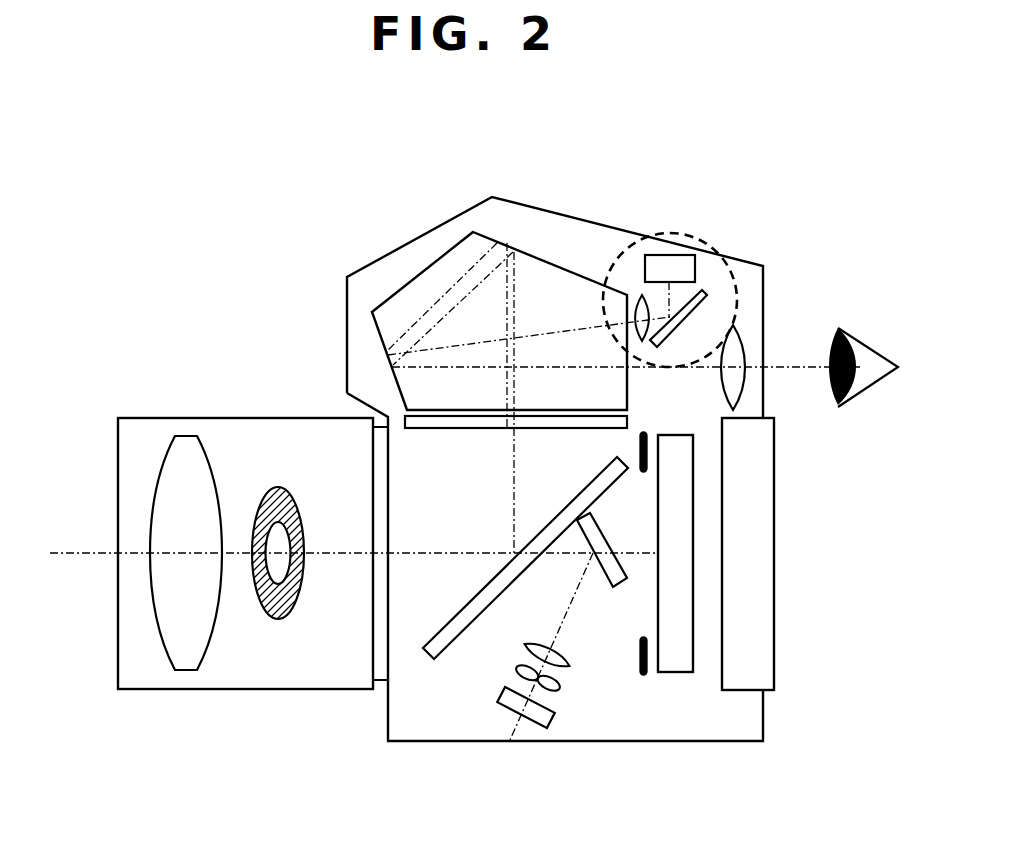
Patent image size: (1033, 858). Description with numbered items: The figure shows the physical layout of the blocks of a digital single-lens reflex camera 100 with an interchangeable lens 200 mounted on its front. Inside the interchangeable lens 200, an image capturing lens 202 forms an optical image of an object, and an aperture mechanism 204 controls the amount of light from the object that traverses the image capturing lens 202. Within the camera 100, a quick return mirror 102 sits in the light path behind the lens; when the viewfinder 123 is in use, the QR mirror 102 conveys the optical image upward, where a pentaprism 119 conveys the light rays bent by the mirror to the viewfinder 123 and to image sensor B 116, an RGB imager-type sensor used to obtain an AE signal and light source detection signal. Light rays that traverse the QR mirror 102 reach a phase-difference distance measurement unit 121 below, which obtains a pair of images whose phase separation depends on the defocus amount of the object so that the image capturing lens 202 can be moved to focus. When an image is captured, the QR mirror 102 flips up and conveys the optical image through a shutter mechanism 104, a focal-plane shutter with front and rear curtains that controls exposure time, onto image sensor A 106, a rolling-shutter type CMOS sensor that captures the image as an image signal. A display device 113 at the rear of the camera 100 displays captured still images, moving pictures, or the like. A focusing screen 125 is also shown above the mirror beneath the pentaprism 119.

The digital single-lens reflex camera 100 is at (763, 715).
The interchangeable lens 200 is at (263, 693).
The image capturing lens 202 is at (185, 435).
The aperture mechanism 204 is at (282, 485).
The pentaprism 119 is at (410, 280).
The focusing screen 125 is at (530, 430).
The quick return (QR) mirror 102 is at (478, 592).
The phase-difference distance measurement unit 121 is at (505, 710).
The shutter mechanism 104 is at (643, 680).
The image sensor A 106 is at (680, 675).
The display device 113 is at (774, 585).
The image sensor B 116 is at (665, 256).
The viewfinder 123 is at (742, 327).